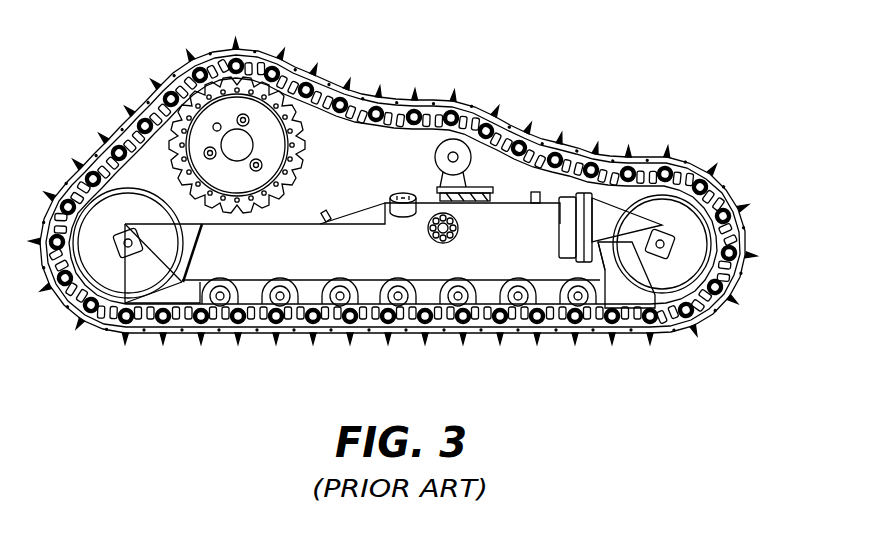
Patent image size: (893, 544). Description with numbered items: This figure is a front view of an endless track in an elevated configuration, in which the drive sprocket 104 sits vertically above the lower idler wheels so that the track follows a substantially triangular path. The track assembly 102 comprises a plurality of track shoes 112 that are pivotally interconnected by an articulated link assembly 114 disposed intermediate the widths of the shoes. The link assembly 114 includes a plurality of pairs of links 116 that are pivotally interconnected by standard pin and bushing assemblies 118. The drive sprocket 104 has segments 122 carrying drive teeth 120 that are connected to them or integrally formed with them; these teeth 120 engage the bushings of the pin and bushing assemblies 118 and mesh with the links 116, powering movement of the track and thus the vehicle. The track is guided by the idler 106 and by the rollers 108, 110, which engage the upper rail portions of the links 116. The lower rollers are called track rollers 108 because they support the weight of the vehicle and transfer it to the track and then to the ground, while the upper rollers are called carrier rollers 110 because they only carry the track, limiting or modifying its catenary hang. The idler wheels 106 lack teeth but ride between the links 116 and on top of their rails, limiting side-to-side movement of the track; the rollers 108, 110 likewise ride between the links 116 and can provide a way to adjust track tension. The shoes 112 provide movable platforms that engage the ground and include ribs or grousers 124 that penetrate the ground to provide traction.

The track assembly 102 is at (704, 40).
The drive sprocket 104 is at (227, 108).
The idler 106 is at (76, 176).
The track rollers 108 is at (142, 337).
The carrier rollers 110 is at (436, 156).
The track shoes 112 is at (195, 333).
The link assembly 114 is at (108, 127).
The links 116 is at (407, 102).
The pin and bushing assemblies 118 is at (100, 222).
The teeth 120 is at (325, 215).
The segments 122 is at (262, 167).
The grousers 124 is at (108, 333).